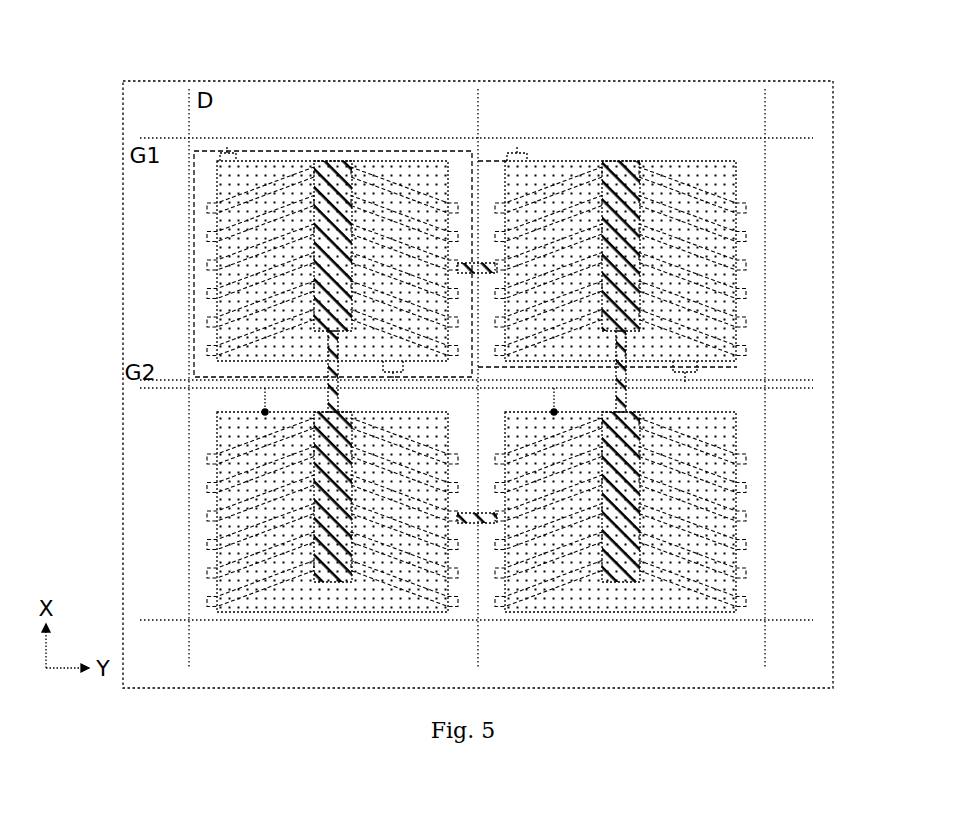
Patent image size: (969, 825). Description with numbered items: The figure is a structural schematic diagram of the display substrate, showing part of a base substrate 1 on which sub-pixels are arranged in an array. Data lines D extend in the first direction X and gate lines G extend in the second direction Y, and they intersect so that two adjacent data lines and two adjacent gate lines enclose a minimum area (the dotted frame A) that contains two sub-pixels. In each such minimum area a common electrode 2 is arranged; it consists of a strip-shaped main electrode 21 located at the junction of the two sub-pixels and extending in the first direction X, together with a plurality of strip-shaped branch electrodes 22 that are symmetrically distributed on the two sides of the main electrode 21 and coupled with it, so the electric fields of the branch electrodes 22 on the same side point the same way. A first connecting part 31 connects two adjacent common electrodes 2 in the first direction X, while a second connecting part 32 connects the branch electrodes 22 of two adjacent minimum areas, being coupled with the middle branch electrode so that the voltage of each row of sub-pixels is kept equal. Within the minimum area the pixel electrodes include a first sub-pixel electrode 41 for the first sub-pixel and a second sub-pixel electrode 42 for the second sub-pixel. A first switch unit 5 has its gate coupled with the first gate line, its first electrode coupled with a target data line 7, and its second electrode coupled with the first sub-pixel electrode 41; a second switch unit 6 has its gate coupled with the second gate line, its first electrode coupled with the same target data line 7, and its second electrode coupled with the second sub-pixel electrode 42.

The base substrate 1 is at (833, 283).
The common electrode 2 is at (612, 191).
The main electrode 21 is at (622, 161).
The branch electrodes 22 is at (673, 180).
The first connecting part 31 is at (625, 405).
The second connecting part 32 is at (459, 513).
The first sub-pixel electrode 41 is at (275, 161).
The second sub-pixel electrode 42 is at (410, 161).
The first switch unit 5 is at (231, 153).
The second switch unit 6 is at (387, 373).
The target data line 7 is at (194, 297).